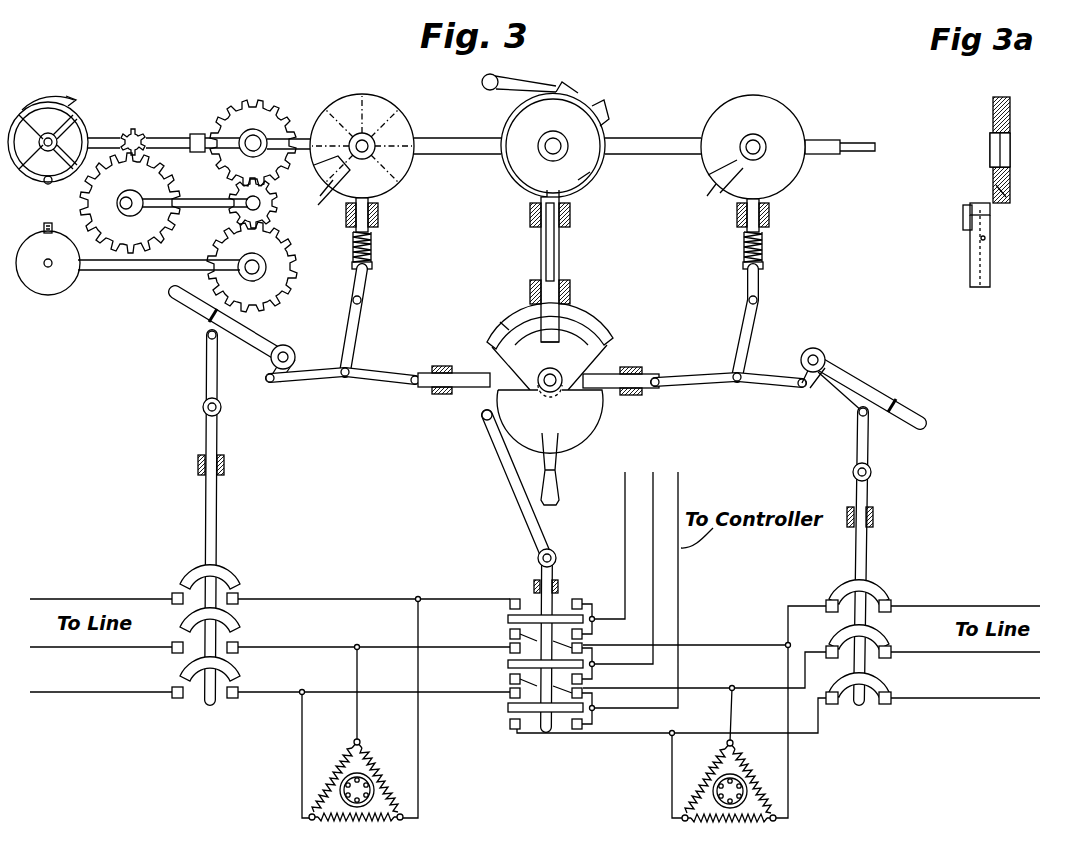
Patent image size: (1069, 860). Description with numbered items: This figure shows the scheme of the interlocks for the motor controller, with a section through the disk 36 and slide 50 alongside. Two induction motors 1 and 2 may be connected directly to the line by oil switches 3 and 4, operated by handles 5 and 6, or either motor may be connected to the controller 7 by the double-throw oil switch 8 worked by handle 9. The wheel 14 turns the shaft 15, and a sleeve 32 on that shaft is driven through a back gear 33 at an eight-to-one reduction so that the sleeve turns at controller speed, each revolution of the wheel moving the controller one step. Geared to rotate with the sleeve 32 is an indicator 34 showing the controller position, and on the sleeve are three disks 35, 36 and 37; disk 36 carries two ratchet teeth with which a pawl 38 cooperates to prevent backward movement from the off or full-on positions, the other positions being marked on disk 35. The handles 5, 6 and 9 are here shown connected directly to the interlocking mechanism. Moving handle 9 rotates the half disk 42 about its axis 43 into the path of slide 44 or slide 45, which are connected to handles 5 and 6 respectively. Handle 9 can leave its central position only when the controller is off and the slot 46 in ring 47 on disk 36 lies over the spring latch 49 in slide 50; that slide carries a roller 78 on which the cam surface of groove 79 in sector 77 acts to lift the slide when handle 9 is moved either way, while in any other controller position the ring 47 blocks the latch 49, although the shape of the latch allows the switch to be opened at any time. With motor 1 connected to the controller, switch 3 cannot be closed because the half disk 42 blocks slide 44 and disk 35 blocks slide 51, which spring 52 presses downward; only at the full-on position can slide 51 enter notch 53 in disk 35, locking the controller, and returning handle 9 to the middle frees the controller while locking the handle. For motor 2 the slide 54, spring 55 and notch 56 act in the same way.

In FIG. 3, the motor 1 is at (375, 768).
In FIG. 3, the motor 2 is at (729, 781).
In FIG. 3, the oil switch 3 is at (238, 588).
In FIG. 3, the oil switch 4 is at (887, 600).
In FIG. 3, the handle 5 is at (184, 307).
In FIG. 3, the handle 6 is at (903, 412).
In FIG. 3, the controller 7 is at (324, 198).
In FIG. 3, the double-throw oil switch 8 is at (558, 612).
In FIG. 3, the handle 9 is at (559, 486).
In FIG. 3, the wheel 14 is at (80, 130).
In FIG. 3, the shaft 15 is at (163, 140).
In FIG. 3, the sleeve 32 is at (470, 154).
In FIG. 3, the back gear 33 is at (198, 203).
In FIG. 3, the indicator 34 is at (62, 294).
In FIG. 3, the disk 35 is at (378, 108).
In FIG. 3, the disk 36 is at (600, 138).
In FIG. 3A, the disk 36 is at (1010, 144).
In FIG. 3, the disk 37 is at (788, 130).
In FIG. 3, the pawl 38 is at (525, 82).
In FIG. 3, the half disk 42 is at (585, 408).
In FIG. 3, the axis 43 is at (556, 378).
In FIG. 3, the slide 44 is at (462, 388).
In FIG. 3, the slide 45 is at (648, 388).
In FIG. 3, the slot 46 is at (558, 190).
In FIG. 3, the ring 47 is at (588, 181).
In FIG. 3A, the ring 47 is at (993, 106).
In FIG. 3, the spring latch 49 is at (556, 228).
In FIG. 3A, the spring latch 49 is at (991, 213).
In FIG. 3, the slide 50 is at (560, 292).
In FIG. 3A, the slide 50 is at (989, 278).
In FIG. 3, the slide 51 is at (366, 283).
In FIG. 3, the spring 52 is at (372, 248).
In FIG. 3, the notch 53 is at (322, 199).
In FIG. 3, the slide 54 is at (757, 290).
In FIG. 3, the spring 55 is at (763, 250).
In FIG. 3, the notch 56 is at (707, 198).
In FIG. 3, the sector 77 is at (500, 335).
In FIG. 3, the roller 78 is at (565, 350).
In FIG. 3, the groove 79 is at (586, 332).